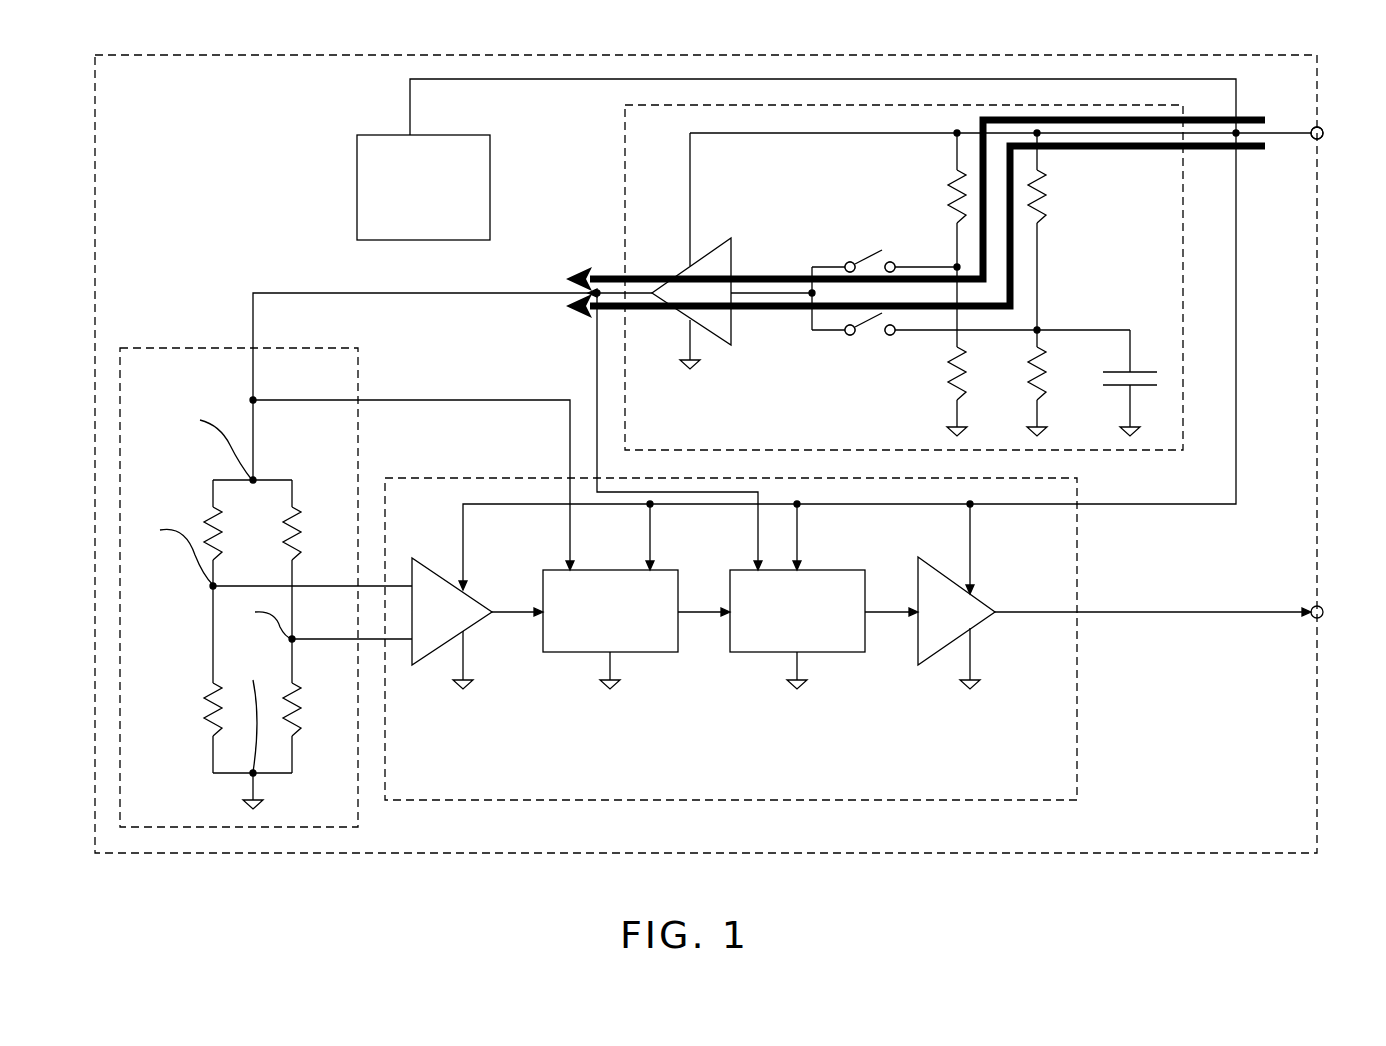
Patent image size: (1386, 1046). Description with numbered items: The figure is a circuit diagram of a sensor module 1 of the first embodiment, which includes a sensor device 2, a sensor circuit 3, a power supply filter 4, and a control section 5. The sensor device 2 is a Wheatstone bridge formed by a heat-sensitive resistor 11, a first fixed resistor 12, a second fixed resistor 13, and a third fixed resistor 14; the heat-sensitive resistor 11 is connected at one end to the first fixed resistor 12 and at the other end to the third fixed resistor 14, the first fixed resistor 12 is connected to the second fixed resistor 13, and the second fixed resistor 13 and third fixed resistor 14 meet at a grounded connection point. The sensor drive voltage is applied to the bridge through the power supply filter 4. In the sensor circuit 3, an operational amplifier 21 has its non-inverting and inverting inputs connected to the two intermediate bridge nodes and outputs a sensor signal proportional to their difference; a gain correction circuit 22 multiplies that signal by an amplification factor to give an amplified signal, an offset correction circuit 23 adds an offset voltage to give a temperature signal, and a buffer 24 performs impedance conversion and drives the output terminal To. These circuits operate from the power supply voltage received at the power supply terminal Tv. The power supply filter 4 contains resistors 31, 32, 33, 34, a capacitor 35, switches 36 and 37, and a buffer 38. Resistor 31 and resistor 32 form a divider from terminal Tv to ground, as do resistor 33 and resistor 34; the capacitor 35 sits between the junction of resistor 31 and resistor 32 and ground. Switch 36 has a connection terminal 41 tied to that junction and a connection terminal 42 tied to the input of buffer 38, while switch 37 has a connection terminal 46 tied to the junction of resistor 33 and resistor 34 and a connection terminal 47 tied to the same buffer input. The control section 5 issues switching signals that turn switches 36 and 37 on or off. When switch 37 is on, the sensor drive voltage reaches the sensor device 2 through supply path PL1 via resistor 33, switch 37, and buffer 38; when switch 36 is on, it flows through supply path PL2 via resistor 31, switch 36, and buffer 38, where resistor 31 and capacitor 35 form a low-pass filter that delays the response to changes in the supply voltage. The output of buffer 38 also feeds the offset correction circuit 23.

The sensor module 1 is at (1325, 339).
The sensor device 2 is at (205, 348).
The sensor circuit 3 is at (457, 478).
The power supply filter 4 is at (621, 132).
The control section 5 is at (357, 160).
The heat-sensitive resistor 11 is at (213, 519).
The first fixed resistor 12 is at (290, 515).
The second fixed resistor 13 is at (292, 734).
The third fixed resistor 14 is at (213, 735).
The operational amplifier 21 is at (436, 651).
The gain correction circuit 22 is at (583, 652).
The offset correction circuit 23 is at (757, 652).
The buffer 24 is at (940, 652).
The resistor 31 is at (1048, 210).
The resistor 32 is at (1044, 380).
The resistor 33 is at (940, 198).
The resistor 34 is at (950, 380).
The capacitor 35 is at (1135, 370).
The switch 36 is at (852, 337).
The switch 37 is at (878, 258).
The buffer 38 is at (695, 260).
The connection terminal 41 is at (890, 335).
The connection terminal 42 is at (845, 334).
The connection terminal 46 is at (894, 262).
The connection terminal 47 is at (845, 261).
The supply path PL1 is at (1256, 117).
The supply path PL2 is at (1252, 152).
The power supply terminal Tv is at (1321, 127).
The output terminal To is at (1321, 605).